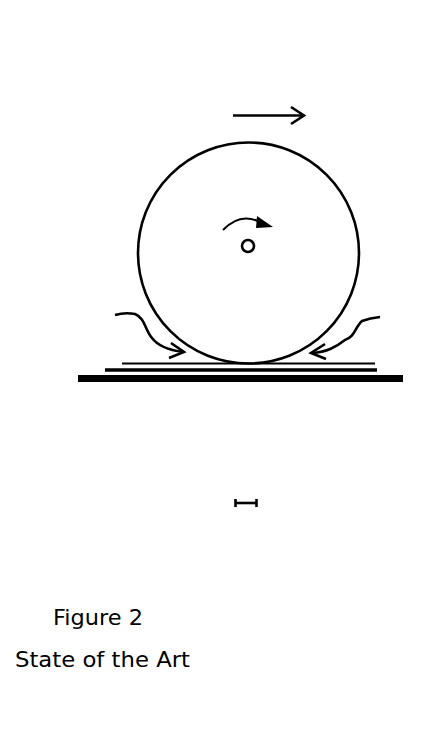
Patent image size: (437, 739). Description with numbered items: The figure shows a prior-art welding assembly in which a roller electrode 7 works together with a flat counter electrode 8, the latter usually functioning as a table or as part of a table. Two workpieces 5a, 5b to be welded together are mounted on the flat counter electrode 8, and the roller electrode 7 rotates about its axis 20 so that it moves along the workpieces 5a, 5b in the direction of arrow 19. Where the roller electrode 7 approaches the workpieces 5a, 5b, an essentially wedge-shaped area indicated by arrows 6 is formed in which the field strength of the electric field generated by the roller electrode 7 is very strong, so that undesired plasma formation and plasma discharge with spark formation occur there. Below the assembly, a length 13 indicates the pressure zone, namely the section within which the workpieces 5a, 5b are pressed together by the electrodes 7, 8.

The workpiece 5a is at (377, 367).
The workpiece 5b is at (104, 368).
The arrows indicating plasma area 6 is at (135, 314).
The roller electrode 7 is at (280, 318).
The flat counter electrode 8 is at (242, 383).
The length of the pressure zone 13 is at (243, 503).
The arrow 19 is at (270, 112).
The roller axis 20 is at (256, 244).